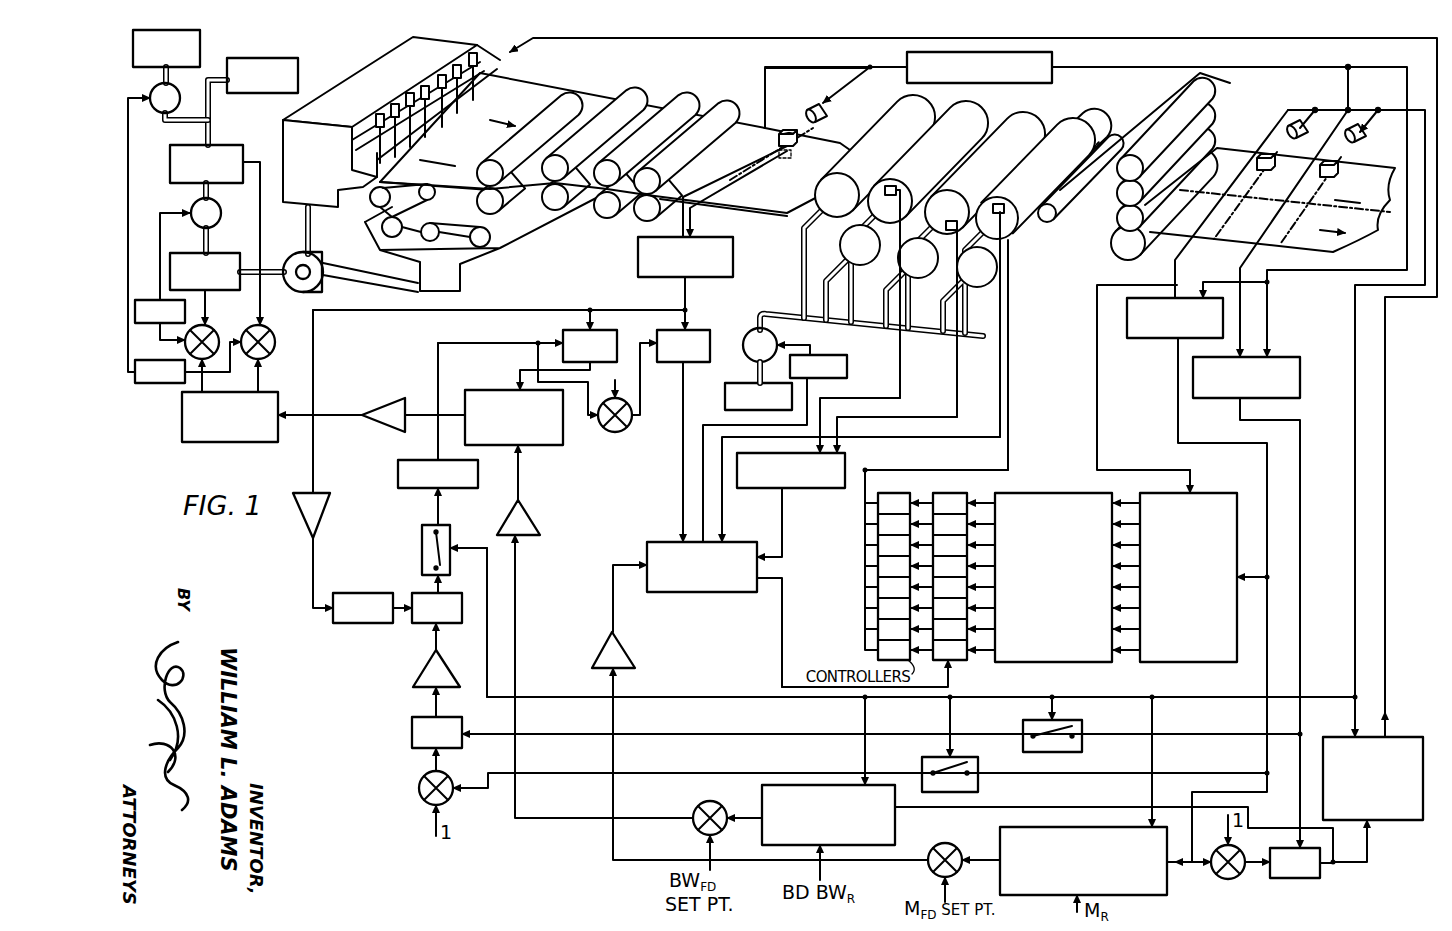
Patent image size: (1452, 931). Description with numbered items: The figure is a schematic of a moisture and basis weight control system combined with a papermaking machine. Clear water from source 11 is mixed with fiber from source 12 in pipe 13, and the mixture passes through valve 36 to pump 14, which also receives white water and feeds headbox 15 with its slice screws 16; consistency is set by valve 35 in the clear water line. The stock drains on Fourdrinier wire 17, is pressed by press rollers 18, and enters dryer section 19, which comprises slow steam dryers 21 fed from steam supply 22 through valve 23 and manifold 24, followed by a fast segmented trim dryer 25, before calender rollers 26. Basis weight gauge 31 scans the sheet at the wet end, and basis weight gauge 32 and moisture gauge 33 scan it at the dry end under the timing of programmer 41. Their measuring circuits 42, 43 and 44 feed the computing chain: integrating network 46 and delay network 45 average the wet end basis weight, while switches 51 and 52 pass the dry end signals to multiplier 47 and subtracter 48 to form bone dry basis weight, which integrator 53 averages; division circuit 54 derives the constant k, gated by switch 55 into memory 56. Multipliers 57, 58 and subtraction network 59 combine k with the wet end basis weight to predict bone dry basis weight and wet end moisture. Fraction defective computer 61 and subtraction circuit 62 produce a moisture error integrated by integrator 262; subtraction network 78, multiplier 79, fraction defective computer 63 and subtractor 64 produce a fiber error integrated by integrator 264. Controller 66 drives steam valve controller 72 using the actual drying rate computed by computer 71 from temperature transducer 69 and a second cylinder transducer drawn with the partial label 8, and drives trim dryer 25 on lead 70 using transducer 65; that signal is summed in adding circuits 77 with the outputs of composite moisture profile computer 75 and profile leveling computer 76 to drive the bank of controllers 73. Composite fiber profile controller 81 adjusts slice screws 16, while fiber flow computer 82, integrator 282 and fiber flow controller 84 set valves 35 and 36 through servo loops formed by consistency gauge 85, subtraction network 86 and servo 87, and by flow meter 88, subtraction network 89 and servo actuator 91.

The temperature sensor 8 is at (896, 189).
The source of clear water 11 is at (200, 42).
The fiber source 12 is at (298, 68).
The pipe 13 is at (200, 105).
The pump 14 is at (290, 258).
The headbox 15 is at (364, 107).
The slice screws 16 is at (420, 100).
The Fourdrinier wire 17 is at (462, 193).
The press rollers 18 is at (667, 93).
The dryer section 19 is at (938, 274).
The steam dryers 21 is at (967, 195).
The steam supply 22 is at (724, 397).
The valve 23 is at (748, 333).
The manifold 24 is at (780, 322).
The segmented trim dryer 25 is at (1049, 222).
The calender rollers 26 is at (1110, 265).
The basis weight gauge 31 is at (788, 130).
The basis weight gauge 32 is at (1340, 170).
The moisture gauge 33 is at (1268, 172).
The valve 35 is at (155, 109).
The valve 36 is at (221, 213).
The programmer 41 is at (1052, 62).
The measuring circuit 42 is at (637, 246).
The measuring circuit 43 is at (1282, 360).
The moisture measuring circuit 44 is at (1146, 338).
The delay network 45 is at (362, 593).
The integrating network 46 is at (323, 508).
The analog multiplier 47 is at (411, 737).
The subtracter 48 is at (418, 795).
The switch 51 is at (1082, 728).
The switch 52 is at (978, 762).
The integrator 53 is at (416, 680).
The division circuit 54 is at (418, 623).
The switch 55 is at (421, 544).
The analog memory 56 is at (397, 477).
The analog multiplier 57 is at (563, 335).
The analog multiplier 58 is at (676, 362).
The subtraction network 59 is at (612, 432).
The fraction defective computer 61 is at (1167, 890).
The subtraction circuit 62 is at (955, 848).
The fraction defective computer 63 is at (761, 840).
The subtractor 64 is at (700, 805).
The temperature transducer 65 is at (1020, 240).
The controller 66 is at (676, 592).
The temperature transducer 69 is at (957, 219).
The lead 70 is at (785, 612).
The computer 71 is at (815, 488).
The controller 72 is at (848, 372).
The bank of controllers 73 is at (883, 494).
The composite moisture profile computer 75 is at (1200, 635).
The profile leveling computer 76 is at (1064, 635).
The adding circuits 77 is at (943, 494).
The subtraction network 78 is at (1230, 880).
The multiplier 79 is at (1320, 870).
The composite fiber profile controller 81 is at (1400, 820).
The fiber flow computer 82 is at (492, 390).
The fiber flow controller 84 is at (236, 442).
The consistency gauge 85 is at (226, 145).
The subtraction network 86 is at (270, 332).
The servo 87 is at (160, 390).
The flow meter 88 is at (180, 253).
The subtraction network 89 is at (214, 333).
The servo actuator 91 is at (140, 300).
The integrator 262 is at (628, 650).
The integrator 264 is at (540, 522).
The integrator 282 is at (392, 398).